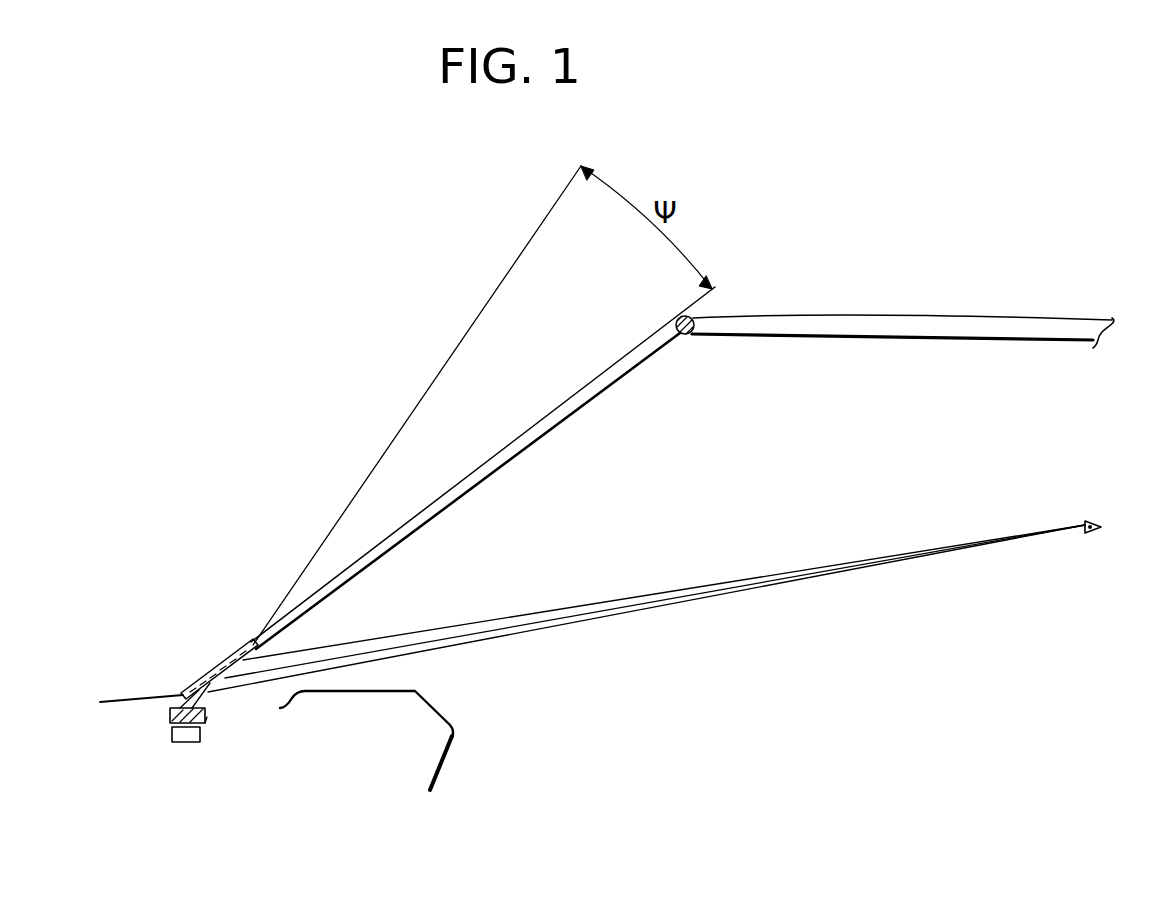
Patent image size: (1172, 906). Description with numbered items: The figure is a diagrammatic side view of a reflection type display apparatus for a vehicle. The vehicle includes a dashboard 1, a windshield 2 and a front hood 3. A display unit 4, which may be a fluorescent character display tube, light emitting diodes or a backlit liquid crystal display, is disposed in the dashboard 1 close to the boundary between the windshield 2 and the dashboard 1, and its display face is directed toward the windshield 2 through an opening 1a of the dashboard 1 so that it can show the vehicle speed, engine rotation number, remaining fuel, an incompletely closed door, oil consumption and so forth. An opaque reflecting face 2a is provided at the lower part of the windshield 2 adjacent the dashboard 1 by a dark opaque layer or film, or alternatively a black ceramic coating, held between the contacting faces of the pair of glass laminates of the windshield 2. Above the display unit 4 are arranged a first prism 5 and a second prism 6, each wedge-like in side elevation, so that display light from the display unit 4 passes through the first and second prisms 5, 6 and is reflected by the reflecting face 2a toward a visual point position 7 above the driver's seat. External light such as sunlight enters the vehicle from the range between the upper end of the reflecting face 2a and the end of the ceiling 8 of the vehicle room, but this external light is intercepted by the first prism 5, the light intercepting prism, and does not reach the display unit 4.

The dashboard 1 is at (428, 773).
The opening 1a is at (248, 707).
The windshield 2 is at (598, 395).
The opaque reflecting face 2a is at (232, 650).
The front hood 3 is at (122, 708).
The display unit 4 is at (190, 742).
The first prism 5 is at (170, 716).
The second prism 6 is at (207, 717).
The visual point position 7 is at (1098, 520).
The ceiling 8 is at (867, 320).